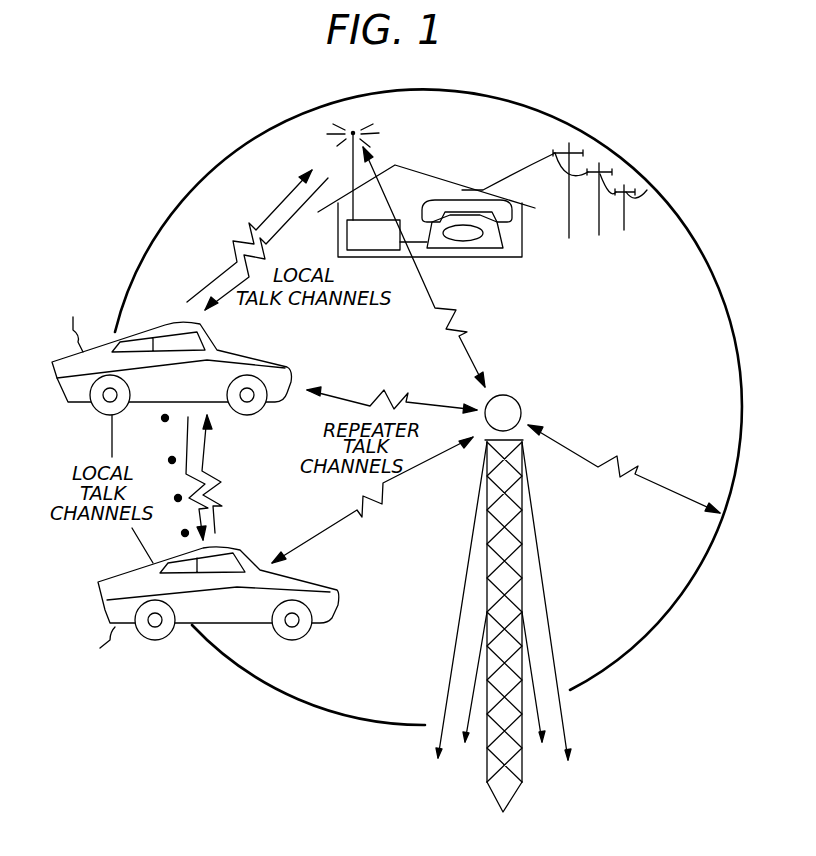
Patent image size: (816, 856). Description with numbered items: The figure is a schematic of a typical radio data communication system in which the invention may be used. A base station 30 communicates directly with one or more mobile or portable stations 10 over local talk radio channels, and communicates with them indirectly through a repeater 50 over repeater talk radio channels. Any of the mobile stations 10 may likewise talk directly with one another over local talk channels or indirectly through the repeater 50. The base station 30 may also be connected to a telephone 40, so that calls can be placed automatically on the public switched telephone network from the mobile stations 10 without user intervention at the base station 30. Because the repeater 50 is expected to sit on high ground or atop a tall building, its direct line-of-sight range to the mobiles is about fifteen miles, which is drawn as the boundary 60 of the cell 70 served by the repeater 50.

The mobile or portable stations 10 is at (257, 358).
The base station 30 is at (390, 220).
The telephone 40 is at (497, 237).
The repeater 50 is at (525, 403).
The boundary 60 is at (683, 208).
The cell 70 is at (689, 400).